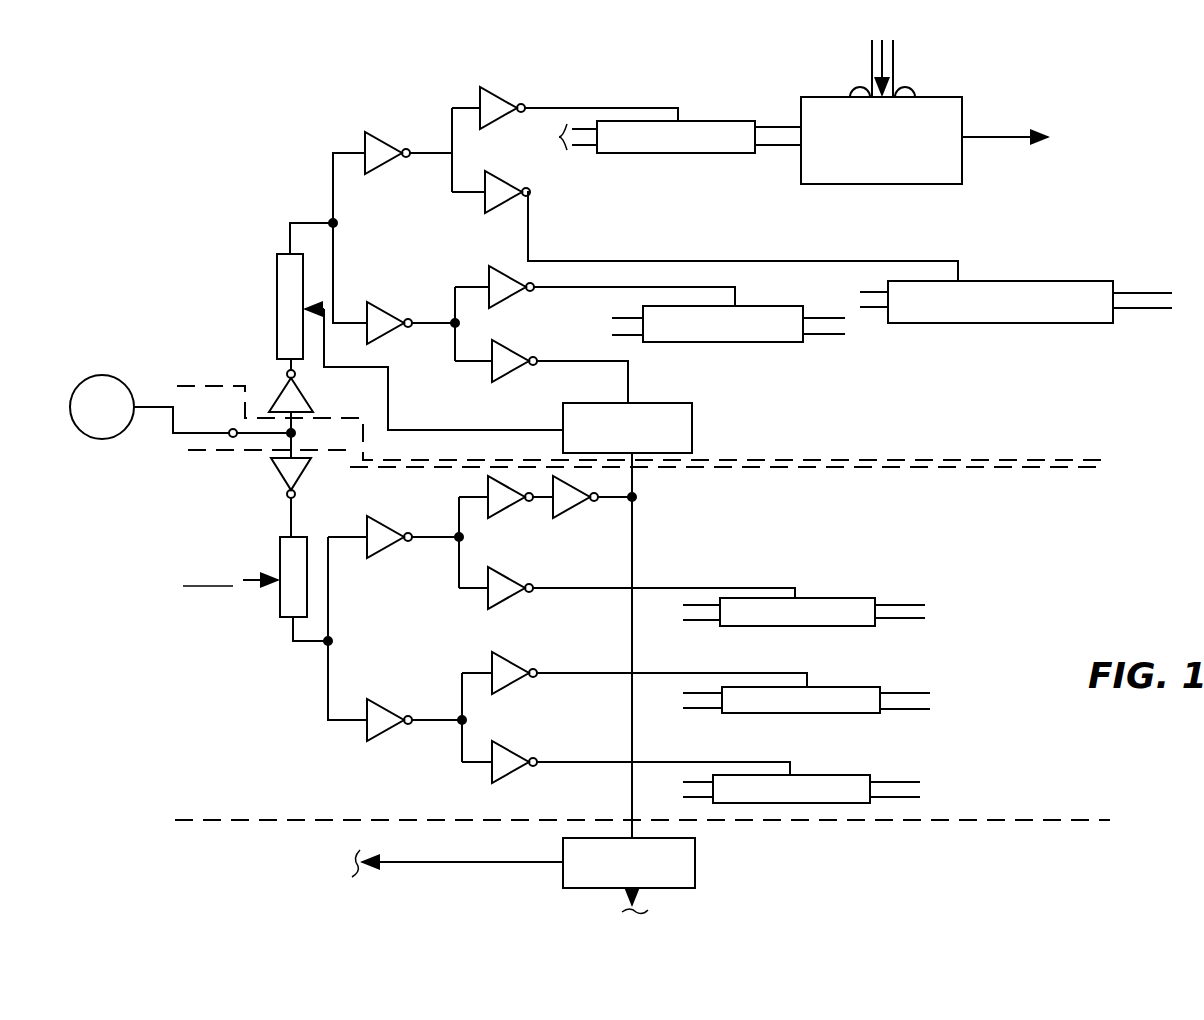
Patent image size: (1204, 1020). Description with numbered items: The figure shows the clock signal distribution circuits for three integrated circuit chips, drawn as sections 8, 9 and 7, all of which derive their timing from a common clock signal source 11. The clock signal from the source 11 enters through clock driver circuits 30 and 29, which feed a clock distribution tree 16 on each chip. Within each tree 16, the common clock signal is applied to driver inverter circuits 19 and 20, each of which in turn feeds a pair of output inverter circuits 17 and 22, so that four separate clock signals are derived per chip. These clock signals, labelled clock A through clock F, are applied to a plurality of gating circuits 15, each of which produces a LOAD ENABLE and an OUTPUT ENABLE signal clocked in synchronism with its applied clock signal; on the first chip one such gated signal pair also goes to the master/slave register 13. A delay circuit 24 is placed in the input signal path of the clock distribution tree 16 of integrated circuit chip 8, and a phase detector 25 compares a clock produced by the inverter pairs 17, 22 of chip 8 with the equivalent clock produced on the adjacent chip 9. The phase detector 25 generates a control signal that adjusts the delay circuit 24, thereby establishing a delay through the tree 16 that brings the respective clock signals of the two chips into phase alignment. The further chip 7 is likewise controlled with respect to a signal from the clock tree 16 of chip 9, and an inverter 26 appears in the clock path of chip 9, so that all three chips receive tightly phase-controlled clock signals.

The integrated circuit chip 7 is at (880, 878).
The integrated circuit chip 8 is at (851, 445).
The integrated circuit chip 9 is at (851, 518).
The clock signal source 11 is at (100, 440).
The master/slave register 13 is at (962, 175).
The gating circuit 15 is at (703, 153).
The clock distribution tree 16 is at (368, 434).
The inverter circuit 17 is at (490, 165).
The driver inverter circuit 19 is at (363, 137).
The driver inverter circuit 20 is at (385, 298).
The inverter circuit 22 is at (537, 731).
The delay circuit 24 is at (277, 312).
The phase detector 25 is at (692, 430).
The inverter 26 is at (575, 518).
The clock driver circuit 29 is at (308, 472).
The clock driver circuit 30 is at (312, 392).